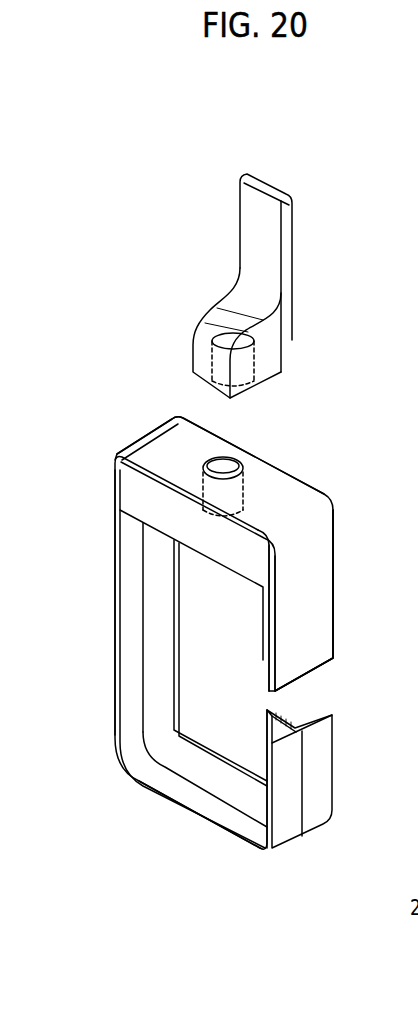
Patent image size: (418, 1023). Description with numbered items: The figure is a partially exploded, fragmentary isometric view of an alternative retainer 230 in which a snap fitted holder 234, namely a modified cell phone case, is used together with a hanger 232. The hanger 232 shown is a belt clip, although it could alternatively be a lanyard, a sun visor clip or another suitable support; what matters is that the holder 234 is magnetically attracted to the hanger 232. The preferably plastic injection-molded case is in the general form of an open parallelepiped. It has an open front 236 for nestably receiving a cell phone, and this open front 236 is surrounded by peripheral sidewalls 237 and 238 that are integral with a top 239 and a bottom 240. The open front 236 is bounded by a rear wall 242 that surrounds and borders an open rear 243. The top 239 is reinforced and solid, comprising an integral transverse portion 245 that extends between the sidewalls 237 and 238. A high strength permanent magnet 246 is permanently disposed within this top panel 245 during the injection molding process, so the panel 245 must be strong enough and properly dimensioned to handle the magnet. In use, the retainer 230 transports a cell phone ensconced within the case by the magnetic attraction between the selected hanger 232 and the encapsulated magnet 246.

The retainer 230 is at (217, 611).
The hanger 232 is at (215, 263).
The holder 234 is at (360, 528).
The open front 236 is at (172, 774).
The peripheral sidewall 237 is at (114, 728).
The peripheral sidewall 238 is at (295, 665).
The top 239 is at (277, 463).
The bottom 240 is at (255, 826).
The rear wall 242 is at (182, 686).
The open rear 243 is at (228, 740).
The transverse portion 245 is at (257, 562).
The permanent magnet 246 is at (230, 461).